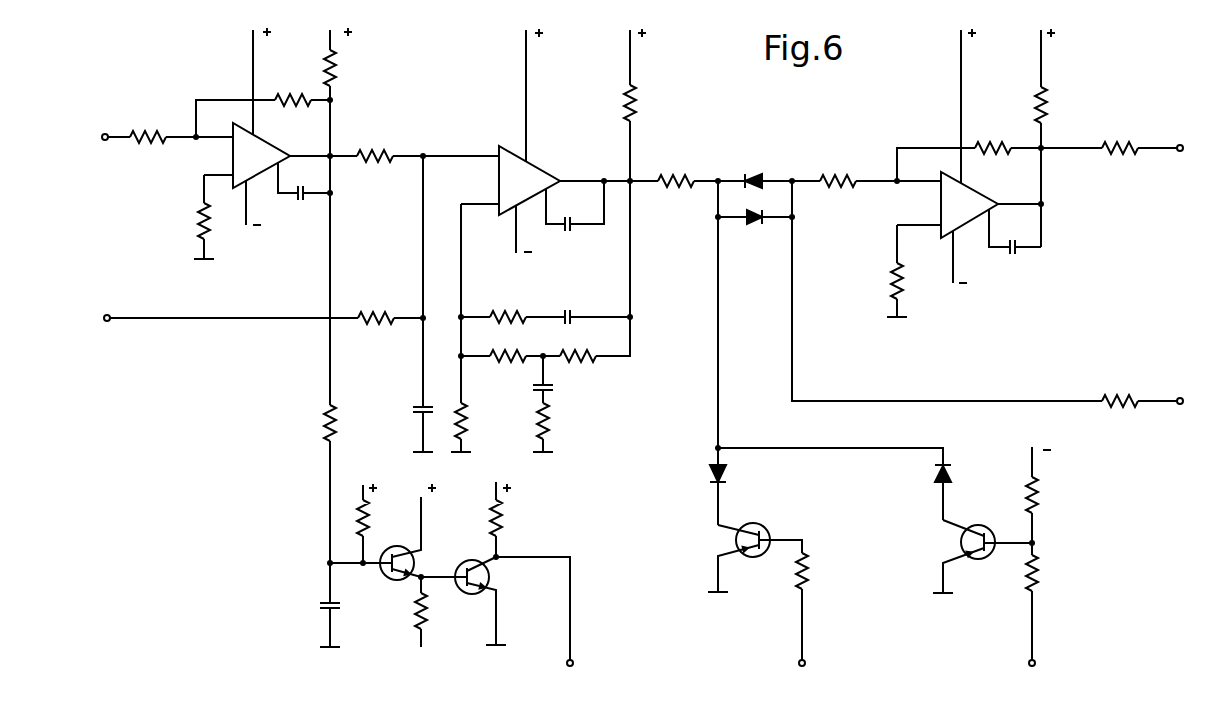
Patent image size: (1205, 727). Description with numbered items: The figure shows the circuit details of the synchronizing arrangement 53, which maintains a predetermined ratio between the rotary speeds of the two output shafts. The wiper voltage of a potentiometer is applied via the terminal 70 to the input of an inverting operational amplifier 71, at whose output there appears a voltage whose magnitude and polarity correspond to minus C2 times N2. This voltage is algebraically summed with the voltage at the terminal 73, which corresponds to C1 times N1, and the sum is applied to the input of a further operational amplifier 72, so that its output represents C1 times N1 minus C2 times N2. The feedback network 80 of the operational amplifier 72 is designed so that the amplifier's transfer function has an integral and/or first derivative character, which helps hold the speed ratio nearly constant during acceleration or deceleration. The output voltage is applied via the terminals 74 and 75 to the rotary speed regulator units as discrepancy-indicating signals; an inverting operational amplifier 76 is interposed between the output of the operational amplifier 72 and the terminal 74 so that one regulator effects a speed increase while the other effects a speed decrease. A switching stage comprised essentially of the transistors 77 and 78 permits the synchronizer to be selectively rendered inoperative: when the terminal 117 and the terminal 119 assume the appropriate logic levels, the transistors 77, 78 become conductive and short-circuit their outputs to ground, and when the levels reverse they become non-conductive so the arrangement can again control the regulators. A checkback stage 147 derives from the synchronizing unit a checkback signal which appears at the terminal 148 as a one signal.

The synchronizing arrangement 53 is at (1088, 92).
The terminal 70 is at (106, 133).
The inverting operational amplifier 71 is at (233, 163).
The operational amplifier 72 is at (537, 163).
The terminal 73 is at (107, 314).
The terminal 74 is at (1180, 145).
The terminal 75 is at (1180, 397).
The inverting operational amplifier 76 is at (965, 228).
The transistor 77 is at (769, 530).
The transistor 78 is at (961, 543).
The feedback network 80 is at (607, 367).
The terminal 117 is at (1035, 663).
The terminal 119 is at (805, 663).
The checkback stage 147 is at (320, 567).
The terminal 148 is at (573, 663).